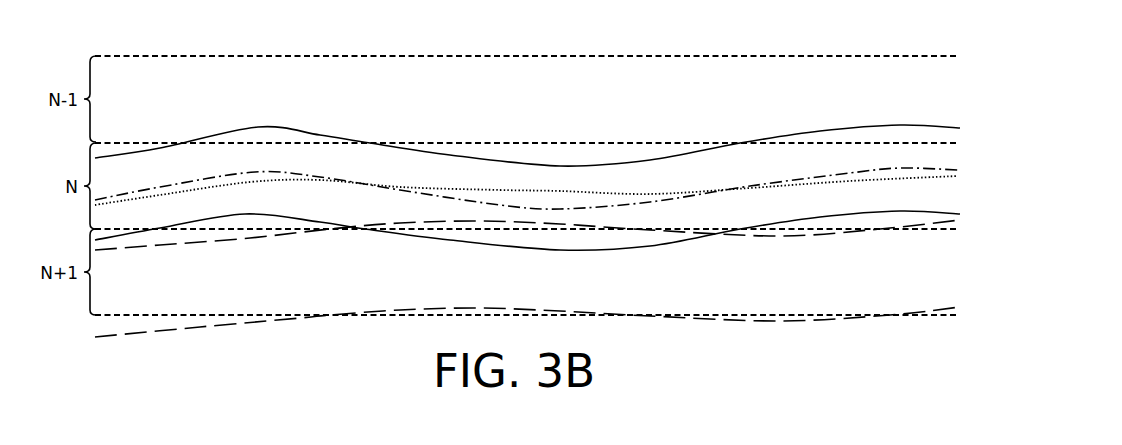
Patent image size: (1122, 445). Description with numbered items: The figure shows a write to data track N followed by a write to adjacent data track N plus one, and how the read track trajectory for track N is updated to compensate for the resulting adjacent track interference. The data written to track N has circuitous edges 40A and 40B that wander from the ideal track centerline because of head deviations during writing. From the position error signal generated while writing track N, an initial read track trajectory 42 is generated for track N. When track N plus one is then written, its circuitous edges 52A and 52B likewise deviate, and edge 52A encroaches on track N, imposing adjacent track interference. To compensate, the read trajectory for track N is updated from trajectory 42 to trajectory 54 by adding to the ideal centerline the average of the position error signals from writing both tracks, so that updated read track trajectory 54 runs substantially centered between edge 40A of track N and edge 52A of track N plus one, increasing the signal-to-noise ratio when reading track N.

The circuitous edge of written data track N 40A is at (258, 128).
The circuitous edge of written data track N 40B is at (300, 219).
The read track trajectory 42 is at (268, 172).
The updated read track trajectory 54 is at (238, 185).
The circuitous edge of written data track N+1 52A is at (238, 241).
The circuitous edge of written data track N+1 52B is at (236, 330).